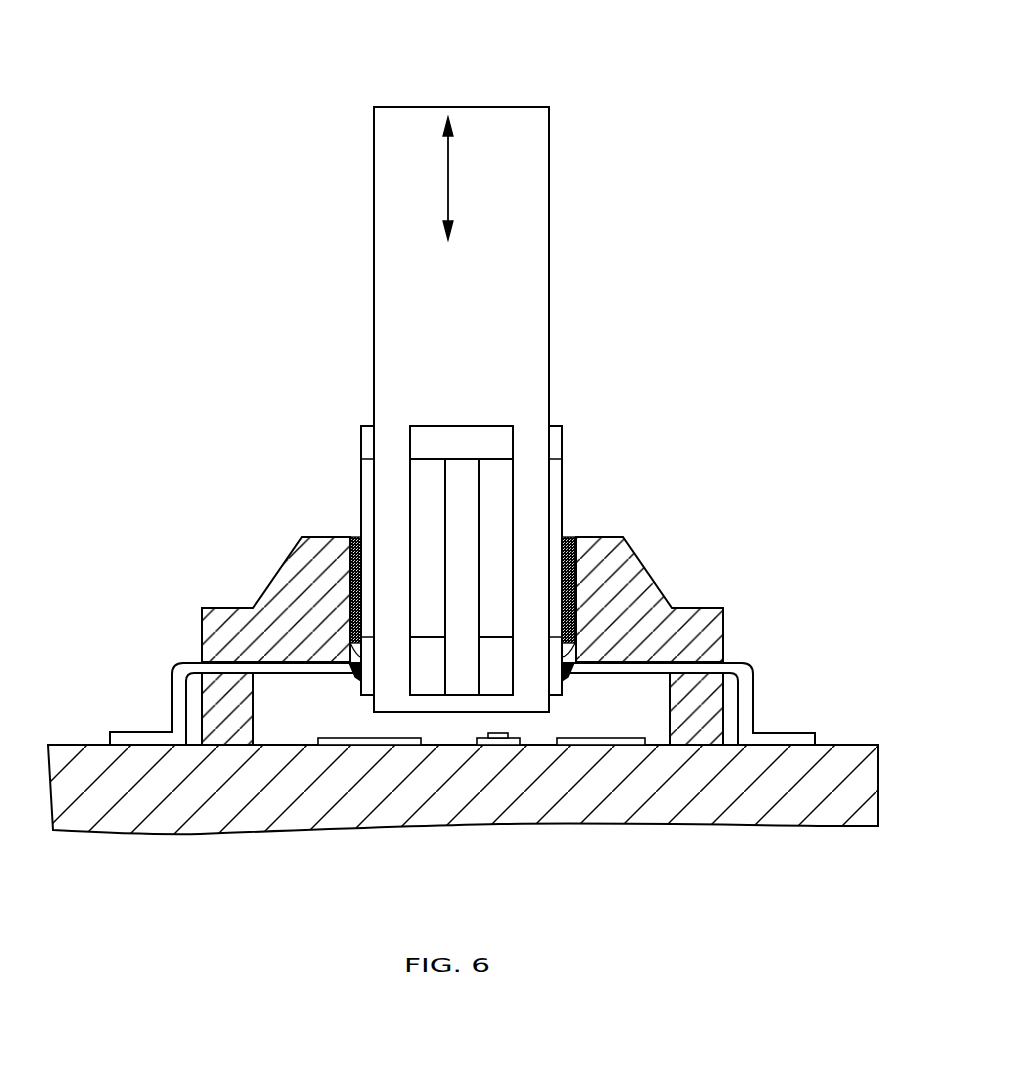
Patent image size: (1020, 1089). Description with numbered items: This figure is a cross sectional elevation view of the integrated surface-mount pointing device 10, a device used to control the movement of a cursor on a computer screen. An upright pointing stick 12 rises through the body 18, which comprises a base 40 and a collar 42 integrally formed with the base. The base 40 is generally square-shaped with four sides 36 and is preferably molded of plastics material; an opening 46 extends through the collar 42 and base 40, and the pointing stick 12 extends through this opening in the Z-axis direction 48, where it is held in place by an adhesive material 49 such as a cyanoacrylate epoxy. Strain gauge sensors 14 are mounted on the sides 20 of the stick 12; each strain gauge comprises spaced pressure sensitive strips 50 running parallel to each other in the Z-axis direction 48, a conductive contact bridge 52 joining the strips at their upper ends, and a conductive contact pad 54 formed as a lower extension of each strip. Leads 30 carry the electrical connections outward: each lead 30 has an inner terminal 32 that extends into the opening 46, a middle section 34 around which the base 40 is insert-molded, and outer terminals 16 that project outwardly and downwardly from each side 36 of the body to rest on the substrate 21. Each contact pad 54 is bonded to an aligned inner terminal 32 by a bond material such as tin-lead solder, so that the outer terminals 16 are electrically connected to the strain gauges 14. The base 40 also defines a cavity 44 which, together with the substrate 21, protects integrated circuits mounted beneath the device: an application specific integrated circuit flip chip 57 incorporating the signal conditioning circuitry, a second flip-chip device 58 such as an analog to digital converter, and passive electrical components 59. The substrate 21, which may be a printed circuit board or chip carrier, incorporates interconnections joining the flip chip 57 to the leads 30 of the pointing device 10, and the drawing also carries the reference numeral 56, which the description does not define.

The integrated surface-mount pointing device 10 is at (607, 99).
The pointing stick 12 is at (370, 211).
The strain gauge sensors 14 is at (356, 457).
The outer terminals 16 is at (153, 745).
The body 18 is at (283, 545).
The sides of the stick 20 is at (468, 311).
The substrate 21 is at (142, 815).
The lead 30 is at (166, 703).
The inner terminal 32 is at (352, 665).
The middle section 34 is at (273, 668).
The sides of the body 36 is at (202, 647).
The base 40 is at (207, 627).
The collar 42 is at (285, 585).
The cavity 44 is at (305, 718).
The opening 46 is at (593, 546).
The Z-axis direction 48 is at (446, 160).
The adhesive material 49 is at (355, 537).
The pressure sensitive strips 50 is at (490, 558).
The conductive contact bridge 52 is at (487, 430).
The conductive contact pad 54 is at (483, 683).
The solder pad 56 is at (357, 680).
The application specific integrated circuit flip chip 57 is at (385, 740).
The second flip-chip device 58 is at (622, 745).
The passive electrical components 59 is at (510, 740).